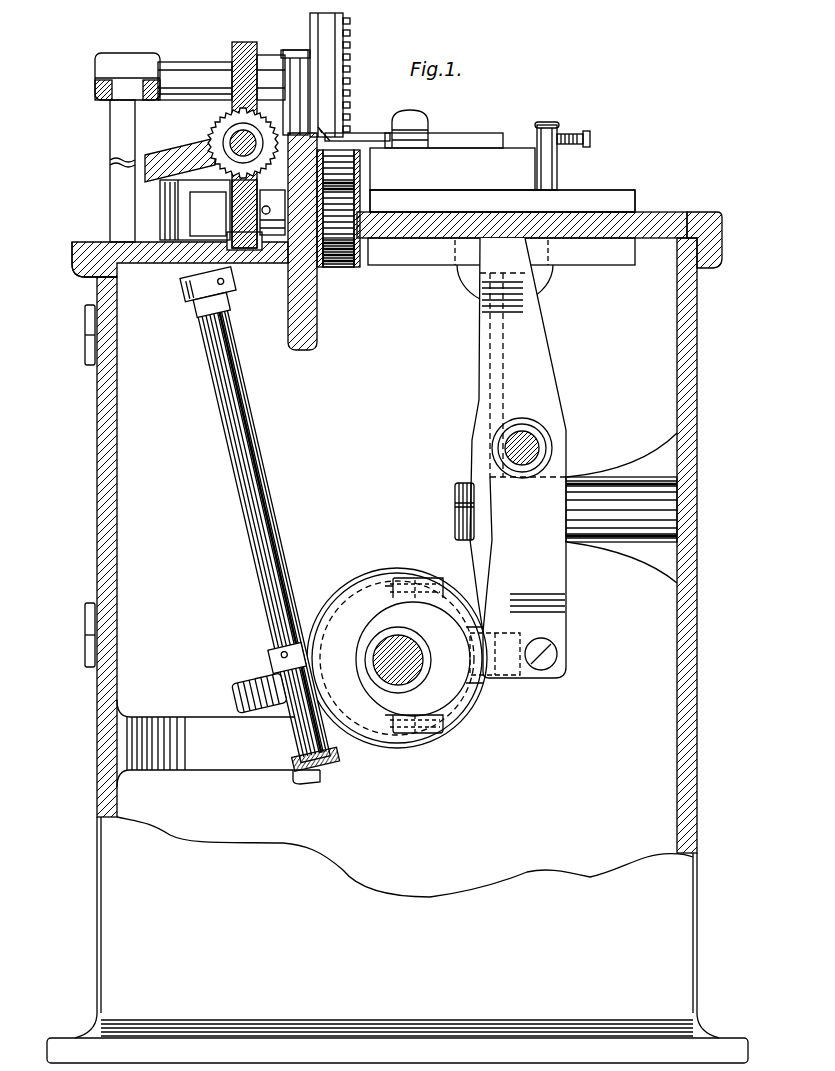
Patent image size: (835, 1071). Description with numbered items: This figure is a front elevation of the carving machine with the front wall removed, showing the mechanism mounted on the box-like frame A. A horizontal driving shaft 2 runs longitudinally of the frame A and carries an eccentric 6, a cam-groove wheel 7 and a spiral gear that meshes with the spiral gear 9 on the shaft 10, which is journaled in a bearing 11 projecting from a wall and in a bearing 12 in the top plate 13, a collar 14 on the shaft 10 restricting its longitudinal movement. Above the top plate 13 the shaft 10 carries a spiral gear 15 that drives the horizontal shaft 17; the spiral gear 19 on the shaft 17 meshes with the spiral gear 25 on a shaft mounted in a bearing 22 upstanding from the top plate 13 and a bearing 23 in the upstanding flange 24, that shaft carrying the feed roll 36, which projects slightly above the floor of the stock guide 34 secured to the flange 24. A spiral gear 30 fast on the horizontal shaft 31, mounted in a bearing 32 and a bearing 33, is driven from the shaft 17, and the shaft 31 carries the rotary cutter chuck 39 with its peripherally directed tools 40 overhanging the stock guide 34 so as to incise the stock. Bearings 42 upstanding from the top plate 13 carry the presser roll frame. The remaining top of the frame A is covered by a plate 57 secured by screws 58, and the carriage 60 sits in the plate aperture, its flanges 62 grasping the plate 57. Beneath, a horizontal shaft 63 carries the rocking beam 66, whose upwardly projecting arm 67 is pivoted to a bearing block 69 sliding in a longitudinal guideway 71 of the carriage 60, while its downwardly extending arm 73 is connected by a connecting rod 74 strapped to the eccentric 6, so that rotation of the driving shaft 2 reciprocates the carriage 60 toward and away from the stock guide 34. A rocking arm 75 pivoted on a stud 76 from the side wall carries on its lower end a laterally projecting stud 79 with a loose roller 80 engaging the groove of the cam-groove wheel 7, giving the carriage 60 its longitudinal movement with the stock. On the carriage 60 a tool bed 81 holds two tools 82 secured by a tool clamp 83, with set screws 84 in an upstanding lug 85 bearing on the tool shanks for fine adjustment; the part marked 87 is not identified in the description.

The driving shaft 2 is at (393, 685).
The eccentric 6 is at (397, 658).
The cam-groove wheel 7 is at (408, 735).
The spiral gear 9 is at (255, 680).
The shaft 10 is at (265, 492).
The bearing 11 is at (305, 745).
The bearing 12 is at (180, 277).
The top plate 13 is at (90, 245).
The collar 14 is at (195, 302).
The spiral gear 15 is at (175, 160).
The horizontal shaft 17 is at (250, 140).
The spiral gear 19 is at (220, 125).
The bearing 22 is at (185, 208).
The bearing 23 is at (272, 238).
The upstanding flange 24 is at (300, 210).
The spiral gear 25 is at (248, 225).
The spiral gear 30 is at (240, 45).
The horizontal shaft 31 is at (182, 70).
The bearing 32 is at (122, 65).
The bearing 33 is at (293, 60).
The stock guide 34 is at (372, 200).
The feed roll 36 is at (357, 270).
The rotary cutter chuck 39 is at (320, 50).
The tools 40 is at (330, 137).
The bearings 42 is at (120, 175).
The plate 57 is at (660, 215).
The screws 58 is at (705, 210).
The carriage 60 is at (605, 195).
The flanges 62 is at (632, 193).
The horizontal shaft 63 is at (540, 445).
The rocking beam 66 is at (524, 375).
The arm 67 is at (533, 360).
The bearing block 69 is at (478, 278).
The longitudinal guideway 71 is at (470, 255).
The downwardly extending arm 73 is at (560, 575).
The connecting rod 74 is at (528, 678).
The rocking arm 75 is at (475, 440).
The stud 76 is at (455, 500).
The laterally projecting stud 79 is at (500, 675).
The loose roller 80 is at (480, 700).
The tool bed 81 is at (450, 148).
The tools 82 is at (482, 135).
The tool clamp 83 is at (418, 122).
The set screws 84 is at (580, 133).
The upstanding lug 85 is at (545, 122).
The bushing lower part 87 is at (355, 262).
The frame A is at (700, 650).